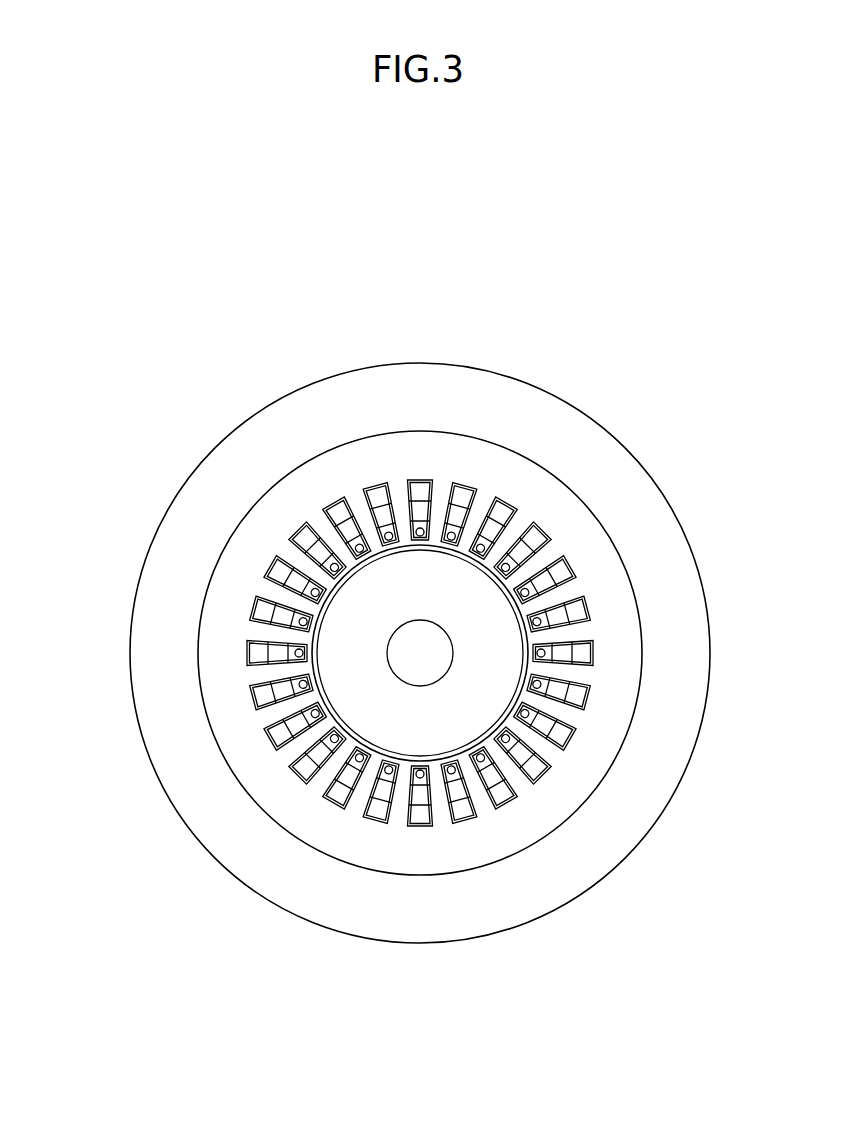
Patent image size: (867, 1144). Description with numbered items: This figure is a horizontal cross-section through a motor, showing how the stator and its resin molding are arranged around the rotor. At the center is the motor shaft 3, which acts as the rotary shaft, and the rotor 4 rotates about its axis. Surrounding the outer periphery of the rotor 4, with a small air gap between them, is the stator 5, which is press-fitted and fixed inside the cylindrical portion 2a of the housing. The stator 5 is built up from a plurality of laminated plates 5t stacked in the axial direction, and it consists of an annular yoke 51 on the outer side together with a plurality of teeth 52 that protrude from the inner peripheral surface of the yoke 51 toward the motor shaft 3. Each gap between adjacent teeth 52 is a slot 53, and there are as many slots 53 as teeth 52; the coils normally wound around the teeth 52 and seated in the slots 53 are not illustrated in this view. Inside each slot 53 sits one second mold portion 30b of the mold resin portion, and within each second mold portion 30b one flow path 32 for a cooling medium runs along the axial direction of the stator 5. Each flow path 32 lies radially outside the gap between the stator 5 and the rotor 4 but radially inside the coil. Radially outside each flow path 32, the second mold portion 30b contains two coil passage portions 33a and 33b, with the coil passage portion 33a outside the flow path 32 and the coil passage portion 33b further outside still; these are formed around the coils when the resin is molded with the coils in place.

The cylindrical portion 2a is at (663, 528).
The motor shaft 3 is at (420, 686).
The rotor 4 is at (500, 662).
The stator 5 is at (400, 651).
The laminated plates 5t is at (575, 517).
The yoke 51 is at (483, 458).
The teeth 52 is at (270, 633).
The slot 53 is at (330, 510).
The second mold portion 30b is at (270, 738).
The flow path 32 is at (306, 780).
The coil passage portion 33a is at (515, 795).
The coil passage portion 33b is at (543, 777).